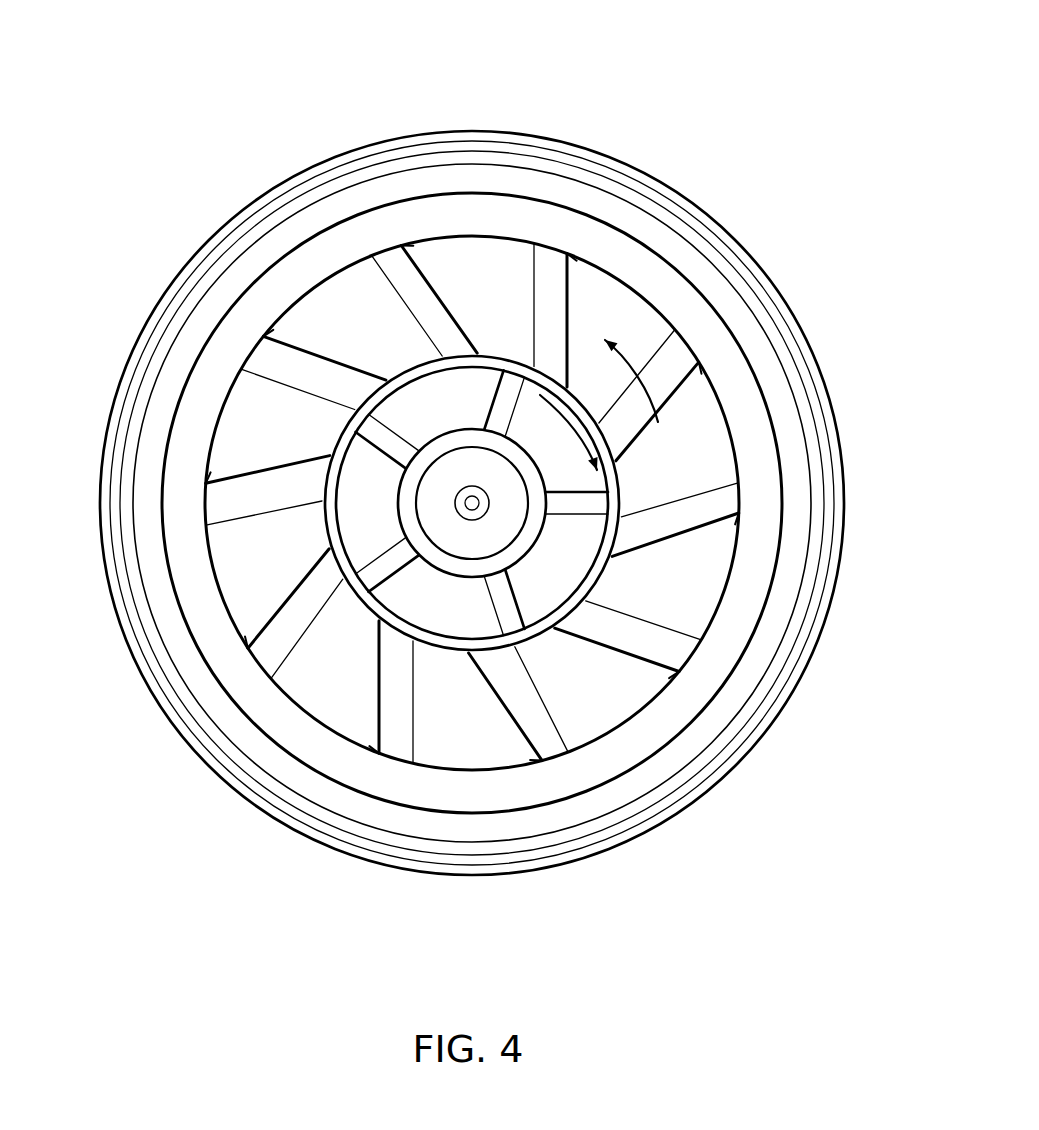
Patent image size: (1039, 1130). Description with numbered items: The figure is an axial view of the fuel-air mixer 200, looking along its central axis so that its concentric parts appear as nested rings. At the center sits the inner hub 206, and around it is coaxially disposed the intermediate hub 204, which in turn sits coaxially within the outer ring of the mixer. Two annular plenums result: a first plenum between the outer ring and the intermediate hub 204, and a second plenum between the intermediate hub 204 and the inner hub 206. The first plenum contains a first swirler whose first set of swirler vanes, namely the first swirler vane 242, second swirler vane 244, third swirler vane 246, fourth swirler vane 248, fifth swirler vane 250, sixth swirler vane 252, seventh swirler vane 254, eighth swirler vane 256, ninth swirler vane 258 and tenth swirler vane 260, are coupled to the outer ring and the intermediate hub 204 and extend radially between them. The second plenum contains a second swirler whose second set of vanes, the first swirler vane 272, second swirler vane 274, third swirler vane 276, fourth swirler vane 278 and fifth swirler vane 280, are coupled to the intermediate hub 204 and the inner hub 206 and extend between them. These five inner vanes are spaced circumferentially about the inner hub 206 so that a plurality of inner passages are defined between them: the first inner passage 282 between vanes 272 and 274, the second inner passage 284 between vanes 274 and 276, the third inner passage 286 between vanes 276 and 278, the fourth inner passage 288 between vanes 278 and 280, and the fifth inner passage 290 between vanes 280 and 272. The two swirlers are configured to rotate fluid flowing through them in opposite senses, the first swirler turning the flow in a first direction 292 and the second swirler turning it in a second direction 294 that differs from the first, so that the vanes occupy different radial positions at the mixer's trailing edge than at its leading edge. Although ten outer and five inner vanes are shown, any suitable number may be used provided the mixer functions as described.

The fuel-air mixer 200 is at (746, 58).
The intermediate hub 204 is at (413, 483).
The inner hub 206 is at (373, 377).
The first swirler vane 242 is at (397, 262).
The second swirler vane 244 is at (548, 267).
The third swirler vane 246 is at (682, 353).
The fourth swirler vane 248 is at (717, 507).
The fifth swirler vane 250 is at (673, 650).
The sixth swirler vane 252 is at (552, 735).
The seventh swirler vane 254 is at (392, 745).
The eighth swirler vane 256 is at (273, 657).
The ninth swirler vane 258 is at (230, 502).
The tenth swirler vane 260 is at (263, 353).
The first swirler vane 272 is at (508, 385).
The second swirler vane 274 is at (628, 515).
The third swirler vane 276 is at (515, 619).
The fourth swirler vane 278 is at (376, 578).
The fifth swirler vane 280 is at (373, 432).
The first inner passage 282 is at (531, 454).
The second inner passage 284 is at (531, 576).
The third inner passage 286 is at (423, 617).
The fourth inner passage 288 is at (350, 511).
The fifth inner passage 290 is at (416, 421).
The first direction 292 is at (655, 398).
The second direction 294 is at (593, 452).